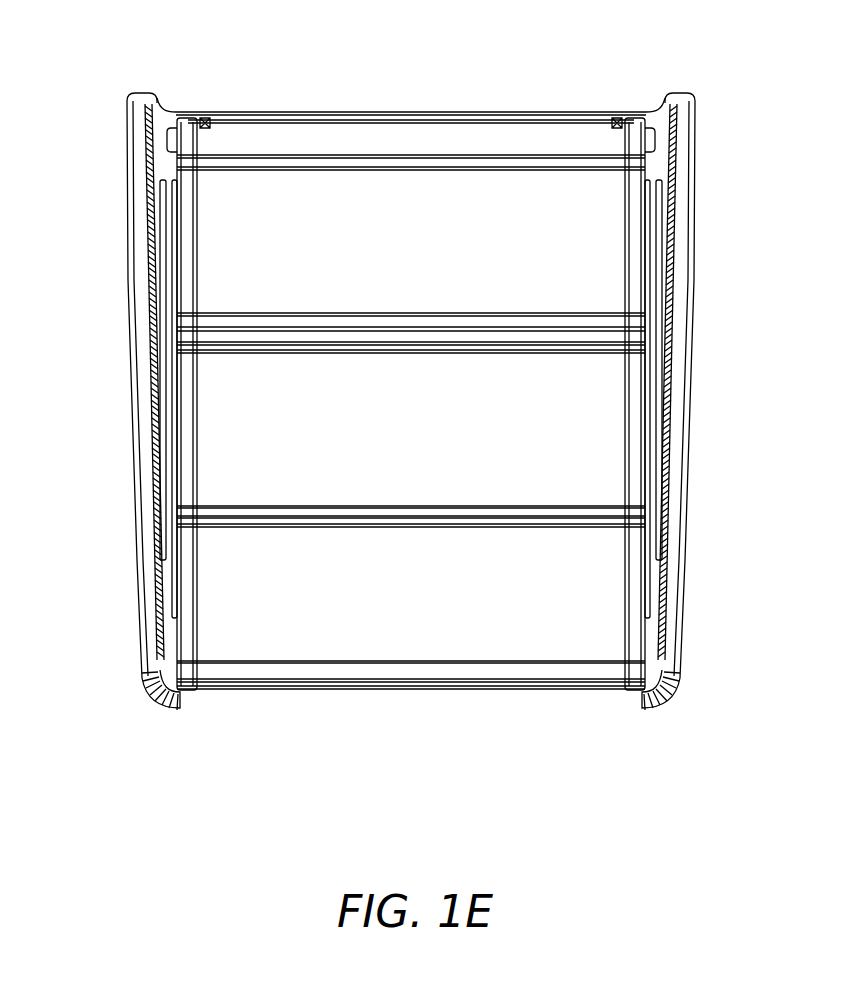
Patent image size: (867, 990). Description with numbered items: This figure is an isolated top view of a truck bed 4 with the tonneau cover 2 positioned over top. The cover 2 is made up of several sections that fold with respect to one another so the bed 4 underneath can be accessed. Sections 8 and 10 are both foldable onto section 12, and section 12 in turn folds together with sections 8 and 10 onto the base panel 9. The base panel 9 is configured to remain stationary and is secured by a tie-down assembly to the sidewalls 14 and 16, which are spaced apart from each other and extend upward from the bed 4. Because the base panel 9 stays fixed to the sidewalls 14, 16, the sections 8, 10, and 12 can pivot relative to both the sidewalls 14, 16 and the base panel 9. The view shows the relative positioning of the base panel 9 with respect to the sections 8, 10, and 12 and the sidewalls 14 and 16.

The tonneau cover 2 is at (680, 320).
The bed 4 is at (433, 720).
The section 8 is at (230, 551).
The base panel 9 is at (568, 138).
The section 10 is at (590, 432).
The section 12 is at (590, 228).
The sidewall 14 is at (142, 622).
The sidewall 16 is at (680, 622).